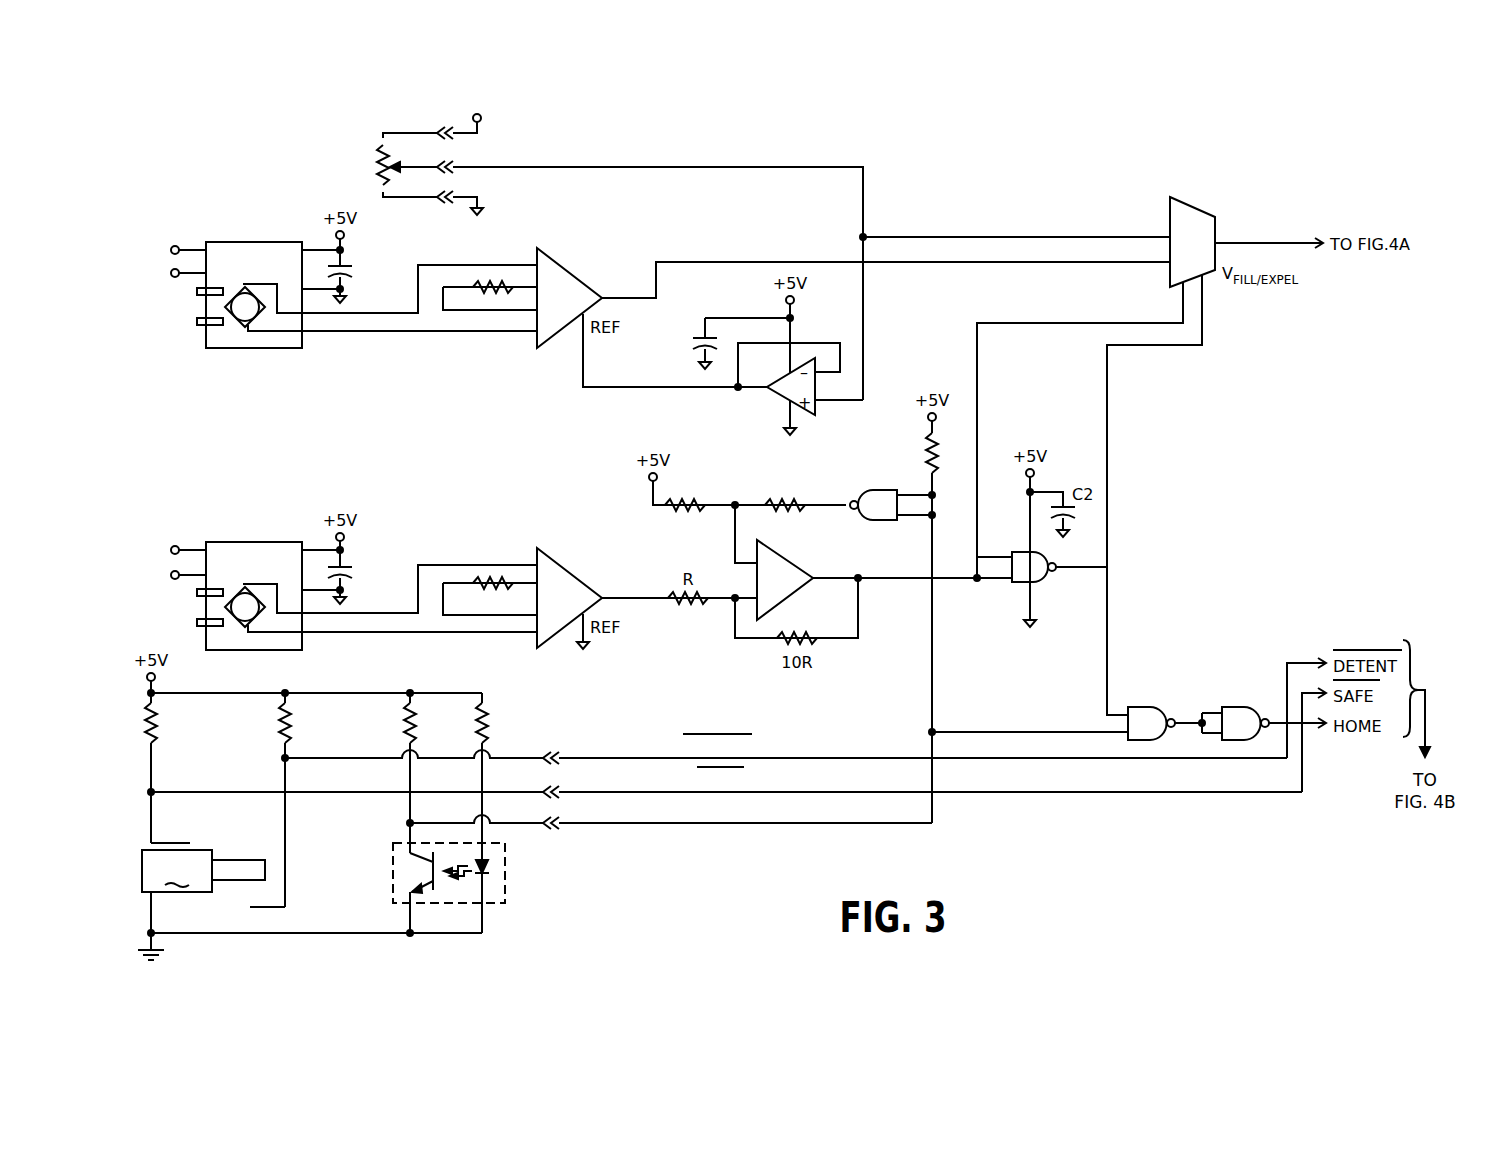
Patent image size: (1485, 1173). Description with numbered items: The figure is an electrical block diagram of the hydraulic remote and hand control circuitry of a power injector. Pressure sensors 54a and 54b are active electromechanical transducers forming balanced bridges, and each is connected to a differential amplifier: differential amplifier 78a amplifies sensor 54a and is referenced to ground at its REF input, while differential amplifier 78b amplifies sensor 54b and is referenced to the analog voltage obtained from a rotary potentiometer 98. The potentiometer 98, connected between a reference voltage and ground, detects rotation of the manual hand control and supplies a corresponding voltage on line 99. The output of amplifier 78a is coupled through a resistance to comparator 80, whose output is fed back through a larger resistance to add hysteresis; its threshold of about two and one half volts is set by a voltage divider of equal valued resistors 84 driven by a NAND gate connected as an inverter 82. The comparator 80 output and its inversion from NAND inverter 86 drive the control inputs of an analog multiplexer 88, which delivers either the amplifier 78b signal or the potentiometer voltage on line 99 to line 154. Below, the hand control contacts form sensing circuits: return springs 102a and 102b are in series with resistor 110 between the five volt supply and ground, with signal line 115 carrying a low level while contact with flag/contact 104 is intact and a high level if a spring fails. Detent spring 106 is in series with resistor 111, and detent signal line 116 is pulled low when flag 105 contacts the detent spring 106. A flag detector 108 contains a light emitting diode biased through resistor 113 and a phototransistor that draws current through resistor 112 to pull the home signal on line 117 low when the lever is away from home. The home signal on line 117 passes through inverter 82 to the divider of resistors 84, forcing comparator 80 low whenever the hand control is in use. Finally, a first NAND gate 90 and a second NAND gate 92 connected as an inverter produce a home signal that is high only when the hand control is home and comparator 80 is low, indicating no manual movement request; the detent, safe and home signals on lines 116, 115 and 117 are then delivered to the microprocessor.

The pressure sensor 54a is at (232, 543).
The pressure sensor 54b is at (232, 243).
The differential amplifier 78a is at (565, 583).
The differential amplifier 78b is at (565, 284).
The comparator 80 is at (778, 567).
The NAND gate 82 is at (879, 490).
The resistors 84 is at (700, 503).
The NAND inverter 86 is at (1018, 585).
The analog multiplexer 88 is at (1188, 213).
The first NAND gate 90 is at (1146, 707).
The second NAND gate 92 is at (1241, 707).
The rotary potentiometer 98 is at (378, 174).
The line 99 is at (575, 166).
The return spring 102a is at (183, 843).
The return spring 102b is at (172, 892).
The flag/contact 104 is at (177, 871).
The flag 105 is at (265, 862).
The detent spring 106 is at (285, 903).
The flag detector 108 is at (505, 873).
The resistor 110 is at (160, 731).
The resistor 111 is at (292, 713).
The resistor 112 is at (402, 719).
The resistor 113 is at (490, 713).
The signal line 115 is at (237, 791).
The detent signal line 116 is at (337, 757).
The line 117 is at (410, 821).
The line 154 is at (1252, 243).